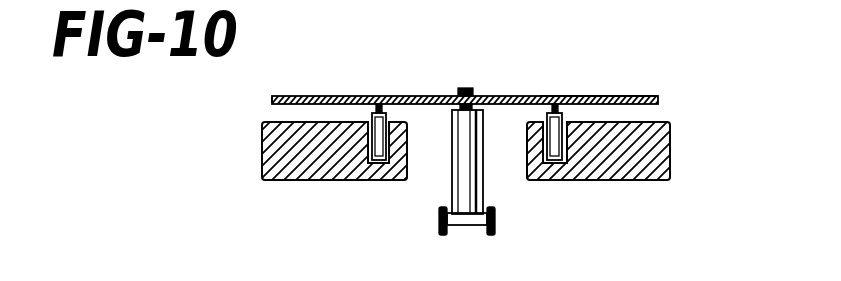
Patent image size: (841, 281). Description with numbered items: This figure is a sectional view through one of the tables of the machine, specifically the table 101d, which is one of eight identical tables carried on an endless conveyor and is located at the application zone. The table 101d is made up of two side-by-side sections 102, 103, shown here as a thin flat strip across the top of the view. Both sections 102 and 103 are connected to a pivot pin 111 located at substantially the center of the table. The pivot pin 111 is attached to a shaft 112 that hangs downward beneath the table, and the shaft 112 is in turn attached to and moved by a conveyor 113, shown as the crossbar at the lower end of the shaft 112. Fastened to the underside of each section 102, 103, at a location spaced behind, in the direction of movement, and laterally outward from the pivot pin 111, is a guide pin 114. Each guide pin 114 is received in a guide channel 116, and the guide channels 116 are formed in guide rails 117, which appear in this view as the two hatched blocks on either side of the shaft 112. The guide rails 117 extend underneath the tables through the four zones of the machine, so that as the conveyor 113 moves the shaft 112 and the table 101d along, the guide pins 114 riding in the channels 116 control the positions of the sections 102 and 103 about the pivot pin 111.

The table 101d is at (264, 97).
The table section 102 is at (348, 96).
The table section 103 is at (592, 96).
The pivot pin 111 is at (470, 88).
The shaft 112 is at (455, 170).
The conveyor 113 is at (467, 230).
The guide pin 114 is at (366, 140).
The guide channel 116 is at (372, 178).
The guide rail 117 is at (262, 152).